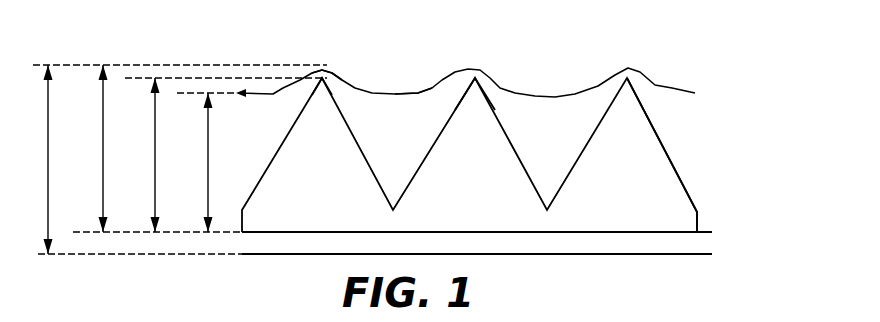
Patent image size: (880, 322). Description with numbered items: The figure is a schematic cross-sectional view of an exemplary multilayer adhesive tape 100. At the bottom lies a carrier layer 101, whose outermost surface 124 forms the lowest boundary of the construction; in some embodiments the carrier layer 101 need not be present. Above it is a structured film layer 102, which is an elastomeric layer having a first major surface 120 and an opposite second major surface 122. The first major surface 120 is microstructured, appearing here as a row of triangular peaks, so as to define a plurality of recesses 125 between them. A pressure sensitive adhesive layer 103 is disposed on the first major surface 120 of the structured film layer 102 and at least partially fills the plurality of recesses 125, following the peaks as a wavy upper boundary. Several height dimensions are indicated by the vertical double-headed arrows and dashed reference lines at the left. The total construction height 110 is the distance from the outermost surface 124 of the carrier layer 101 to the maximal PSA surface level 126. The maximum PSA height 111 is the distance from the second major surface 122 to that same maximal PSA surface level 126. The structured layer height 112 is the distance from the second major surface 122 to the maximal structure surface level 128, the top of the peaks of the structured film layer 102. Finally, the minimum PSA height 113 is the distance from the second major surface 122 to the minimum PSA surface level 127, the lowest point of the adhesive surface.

The multilayer adhesive tape 100 is at (665, 32).
The carrier layer 101 is at (697, 247).
The structured film layer 102 is at (660, 172).
The pressure sensitive adhesive layer 103 is at (566, 112).
The total construction height 110 is at (48, 153).
The maximum PSA height 111 is at (103, 153).
The structured layer height 112 is at (155, 153).
The minimum PSA height 113 is at (208, 153).
The first major surface 120 is at (656, 128).
The second major surface 122 is at (665, 232).
The outermost surface 124 is at (673, 255).
The recesses 125 is at (520, 108).
The maximal PSA surface level 126 is at (330, 72).
The minimum PSA surface level 127 is at (412, 92).
The maximal structure surface level 128 is at (333, 76).